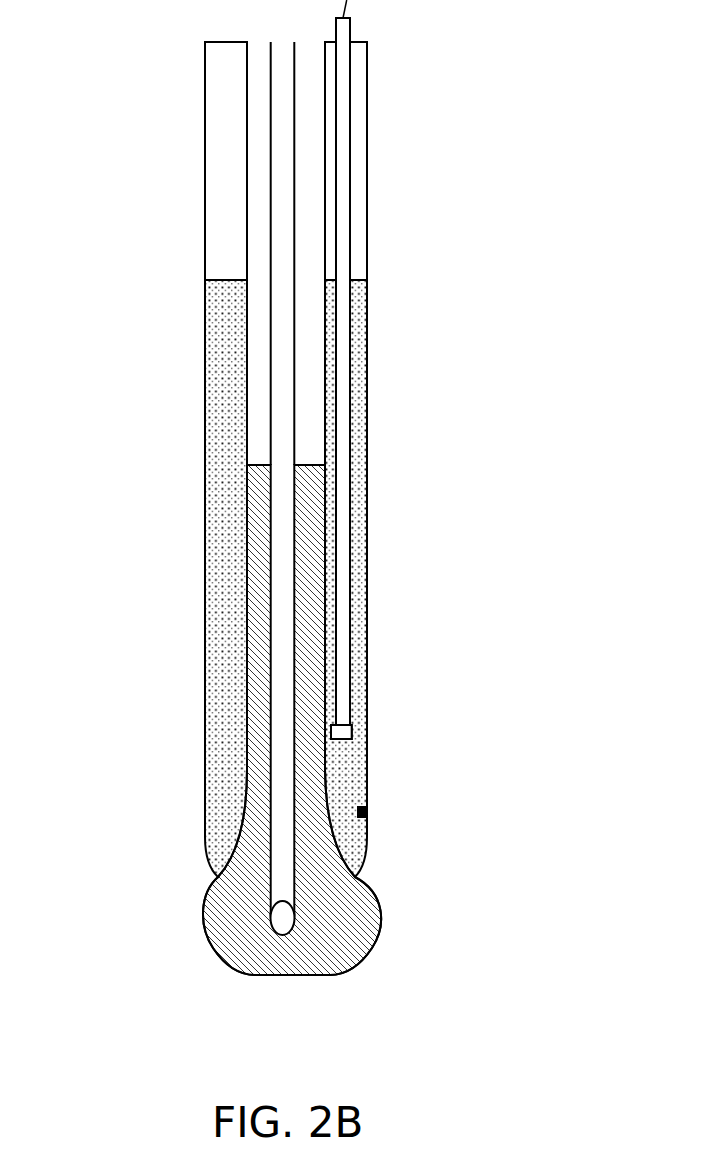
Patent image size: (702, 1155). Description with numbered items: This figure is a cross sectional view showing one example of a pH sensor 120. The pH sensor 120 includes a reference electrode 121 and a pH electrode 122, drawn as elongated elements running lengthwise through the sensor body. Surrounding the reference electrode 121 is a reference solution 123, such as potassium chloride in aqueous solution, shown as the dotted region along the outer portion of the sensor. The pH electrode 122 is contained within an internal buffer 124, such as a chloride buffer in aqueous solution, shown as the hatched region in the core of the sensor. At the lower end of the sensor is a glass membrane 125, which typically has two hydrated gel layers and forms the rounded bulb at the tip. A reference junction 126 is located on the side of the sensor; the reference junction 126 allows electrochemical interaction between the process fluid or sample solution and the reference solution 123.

The pH sensor 120 is at (505, 337).
The reference electrode 121 is at (345, 608).
The pH electrode 122 is at (295, 892).
The reference solution 123 is at (223, 670).
The internal buffer 124 is at (258, 818).
The glass membrane 125 is at (215, 950).
The reference junction 126 is at (367, 813).